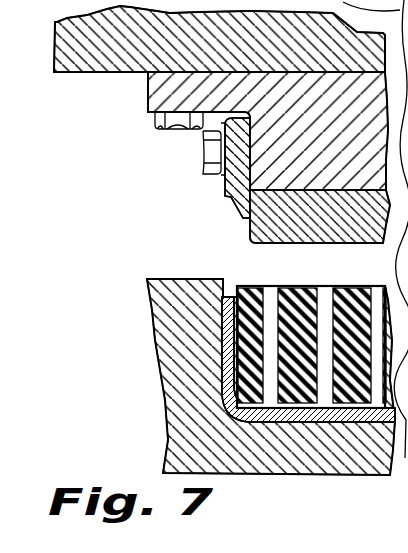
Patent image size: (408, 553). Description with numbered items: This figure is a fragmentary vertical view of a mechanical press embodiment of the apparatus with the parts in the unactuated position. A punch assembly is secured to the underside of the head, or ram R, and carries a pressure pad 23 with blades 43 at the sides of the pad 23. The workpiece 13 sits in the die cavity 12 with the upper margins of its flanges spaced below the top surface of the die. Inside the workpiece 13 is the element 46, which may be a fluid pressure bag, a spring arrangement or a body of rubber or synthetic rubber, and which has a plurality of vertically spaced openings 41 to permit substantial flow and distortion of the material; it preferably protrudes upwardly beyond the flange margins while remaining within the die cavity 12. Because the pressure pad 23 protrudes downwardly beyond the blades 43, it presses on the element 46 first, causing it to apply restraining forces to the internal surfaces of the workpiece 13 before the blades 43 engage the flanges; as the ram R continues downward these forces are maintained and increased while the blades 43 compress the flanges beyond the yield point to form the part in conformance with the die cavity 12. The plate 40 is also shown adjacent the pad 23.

The ram R is at (93, 65).
The blades 43 is at (232, 157).
The clamp plate 40 is at (280, 176).
The pressure pad 23 is at (258, 233).
The vertically spaced openings 41 is at (280, 286).
The element 46 is at (240, 355).
The die cavity 12 is at (300, 420).
The workpiece 13 is at (330, 423).